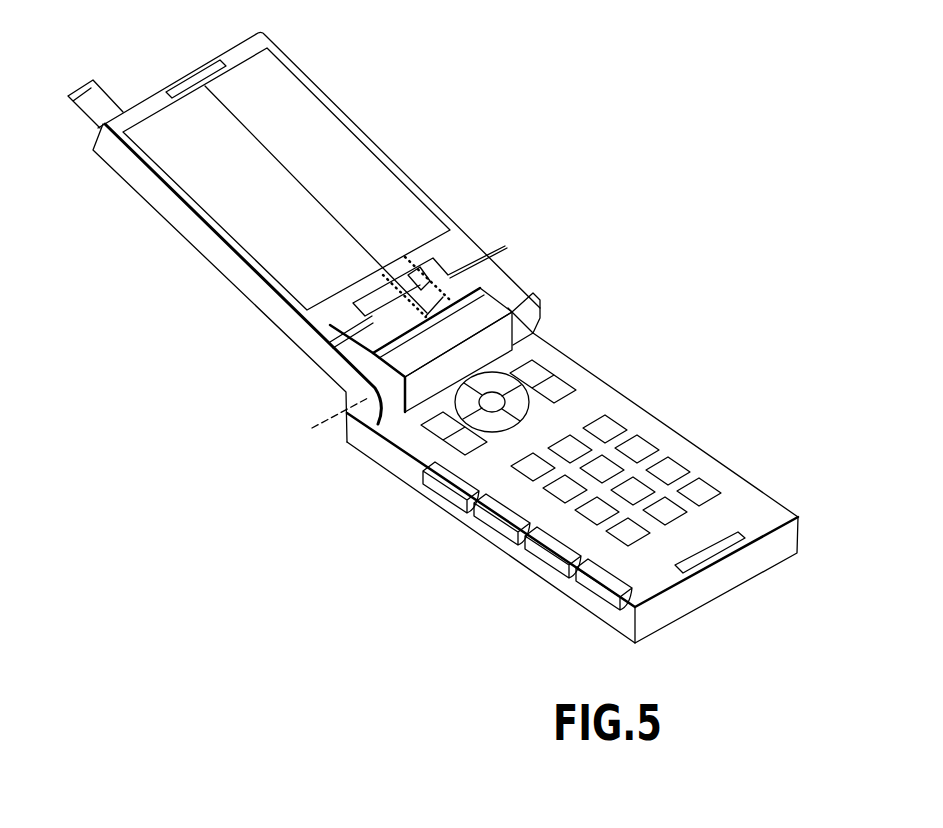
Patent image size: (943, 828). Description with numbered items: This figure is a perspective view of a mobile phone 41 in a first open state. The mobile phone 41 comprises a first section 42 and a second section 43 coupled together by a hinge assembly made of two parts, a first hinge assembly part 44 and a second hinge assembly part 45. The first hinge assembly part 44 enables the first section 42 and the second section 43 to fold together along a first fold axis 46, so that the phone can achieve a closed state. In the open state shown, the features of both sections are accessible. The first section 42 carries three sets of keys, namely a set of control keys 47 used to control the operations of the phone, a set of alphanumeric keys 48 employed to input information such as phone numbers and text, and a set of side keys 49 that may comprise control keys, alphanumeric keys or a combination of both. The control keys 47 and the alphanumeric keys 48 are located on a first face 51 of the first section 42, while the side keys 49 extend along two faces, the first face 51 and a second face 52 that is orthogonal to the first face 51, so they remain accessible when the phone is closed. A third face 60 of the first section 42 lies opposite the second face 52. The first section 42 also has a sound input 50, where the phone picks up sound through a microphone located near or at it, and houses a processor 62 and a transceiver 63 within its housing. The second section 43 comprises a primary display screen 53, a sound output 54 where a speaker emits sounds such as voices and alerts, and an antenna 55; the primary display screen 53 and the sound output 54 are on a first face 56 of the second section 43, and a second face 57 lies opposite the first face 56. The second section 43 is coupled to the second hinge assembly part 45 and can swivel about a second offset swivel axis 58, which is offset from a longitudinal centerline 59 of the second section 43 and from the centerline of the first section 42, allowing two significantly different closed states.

The mobile phone 41 is at (424, 342).
The first section 42 is at (742, 562).
The second section 43 is at (153, 98).
The first hinge assembly part 44 is at (502, 310).
The second hinge assembly part 45 is at (466, 283).
The first fold axis 46 is at (541, 299).
The control keys 47 is at (613, 373).
The alphanumeric keys 48 is at (638, 390).
The side keys 49 is at (377, 493).
The sound input 50 is at (733, 531).
The first face 51 is at (567, 422).
The second face 52 is at (627, 617).
The primary display screen 53 is at (320, 112).
The sound output 54 is at (213, 60).
The antenna 55 is at (85, 102).
The first face 56 is at (463, 243).
The second face 57 is at (95, 212).
The second offset swivel axis 58 is at (375, 362).
The longitudinal centerline 59 is at (330, 343).
The third face 60 is at (771, 459).
The processor 62 is at (483, 463).
The transceiver 63 is at (513, 483).